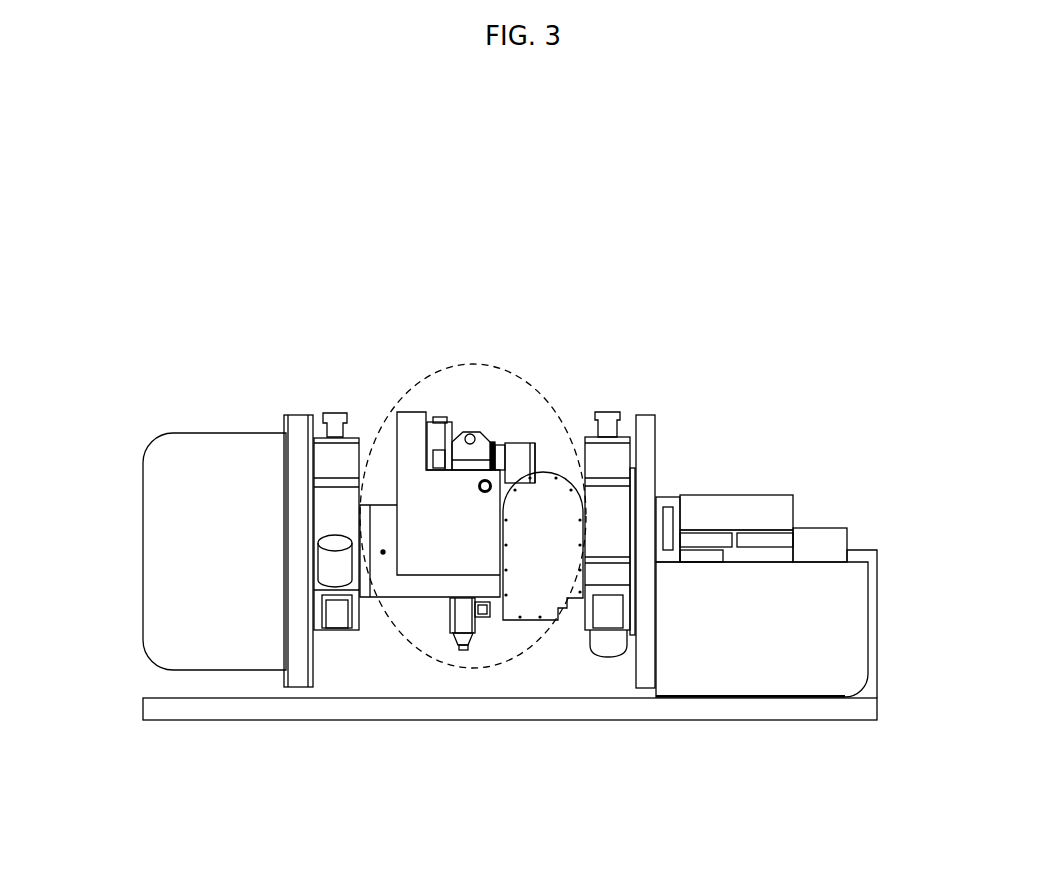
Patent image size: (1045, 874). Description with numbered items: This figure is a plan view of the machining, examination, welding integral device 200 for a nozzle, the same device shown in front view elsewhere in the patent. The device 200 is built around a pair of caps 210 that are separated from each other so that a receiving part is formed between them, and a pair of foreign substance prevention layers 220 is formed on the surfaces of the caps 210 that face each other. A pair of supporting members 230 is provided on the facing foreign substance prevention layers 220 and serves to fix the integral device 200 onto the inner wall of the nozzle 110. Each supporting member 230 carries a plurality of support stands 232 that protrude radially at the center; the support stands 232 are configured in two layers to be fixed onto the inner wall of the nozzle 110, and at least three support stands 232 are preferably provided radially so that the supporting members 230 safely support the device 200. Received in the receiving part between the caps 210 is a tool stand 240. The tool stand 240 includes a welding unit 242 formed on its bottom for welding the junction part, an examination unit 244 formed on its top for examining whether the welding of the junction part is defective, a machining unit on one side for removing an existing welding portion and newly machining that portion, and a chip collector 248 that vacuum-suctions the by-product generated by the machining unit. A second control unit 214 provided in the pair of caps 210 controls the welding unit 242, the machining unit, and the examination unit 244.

The machining, examination, welding integral device 200 is at (493, 143).
The nozzle 110 is at (205, 712).
The caps 210 is at (247, 653).
The second control unit 214 is at (762, 508).
The foreign substance prevention layers 220 is at (297, 688).
The supporting members 230 is at (333, 390).
The support stands 232 is at (331, 542).
The tool stand 240 is at (482, 365).
The welding unit 242 is at (468, 650).
The examination unit 244 is at (438, 417).
The chip collector 248 is at (410, 563).